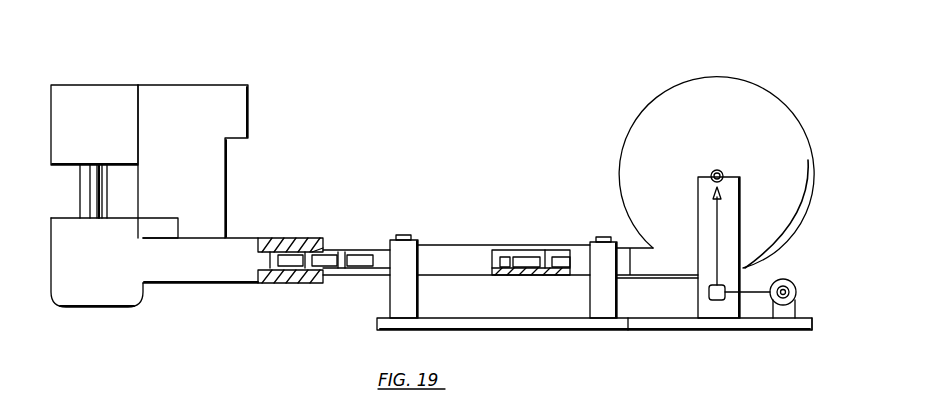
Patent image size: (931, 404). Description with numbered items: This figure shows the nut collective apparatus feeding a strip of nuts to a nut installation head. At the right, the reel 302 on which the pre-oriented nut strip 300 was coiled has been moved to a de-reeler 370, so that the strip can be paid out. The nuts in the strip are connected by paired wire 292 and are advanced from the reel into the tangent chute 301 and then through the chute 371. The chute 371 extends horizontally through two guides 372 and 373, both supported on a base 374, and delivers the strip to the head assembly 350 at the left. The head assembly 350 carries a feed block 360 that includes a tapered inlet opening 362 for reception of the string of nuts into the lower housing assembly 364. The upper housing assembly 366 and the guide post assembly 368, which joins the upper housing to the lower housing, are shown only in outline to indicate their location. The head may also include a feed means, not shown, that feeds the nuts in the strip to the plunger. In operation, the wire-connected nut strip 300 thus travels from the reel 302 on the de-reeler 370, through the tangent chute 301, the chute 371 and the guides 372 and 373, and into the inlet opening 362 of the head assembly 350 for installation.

The head assembly 350 is at (179, 70).
The upper housing assembly 366 is at (112, 130).
The guide post assembly 368 is at (80, 192).
The lower housing assembly 364 is at (112, 294).
The feed block 360 is at (281, 240).
The tapered inlet opening 362 is at (320, 254).
The guide 372 is at (390, 300).
The chute 371 is at (506, 278).
The paired wire 292 is at (545, 252).
The nut strip 300 is at (565, 252).
The guide 373 is at (605, 305).
The tangent chute 301 is at (661, 279).
The base 374 is at (503, 322).
The de-reeler 370 is at (573, 128).
The reel 302 is at (812, 174).